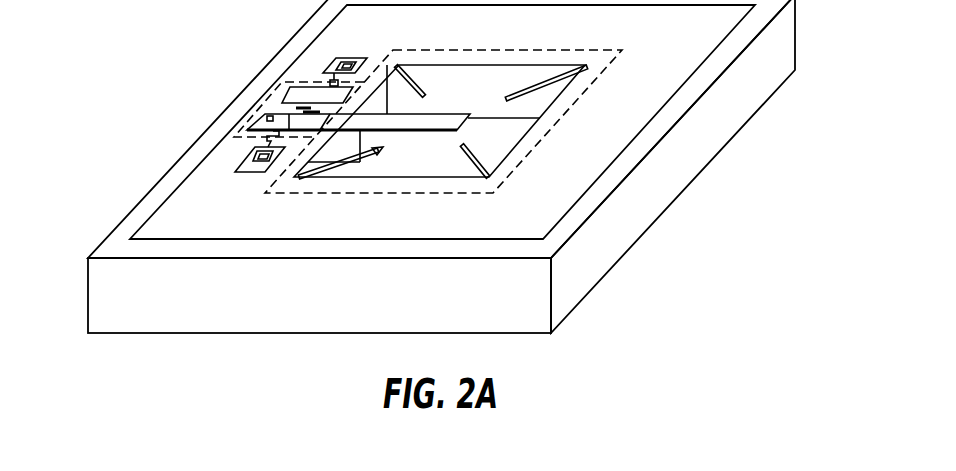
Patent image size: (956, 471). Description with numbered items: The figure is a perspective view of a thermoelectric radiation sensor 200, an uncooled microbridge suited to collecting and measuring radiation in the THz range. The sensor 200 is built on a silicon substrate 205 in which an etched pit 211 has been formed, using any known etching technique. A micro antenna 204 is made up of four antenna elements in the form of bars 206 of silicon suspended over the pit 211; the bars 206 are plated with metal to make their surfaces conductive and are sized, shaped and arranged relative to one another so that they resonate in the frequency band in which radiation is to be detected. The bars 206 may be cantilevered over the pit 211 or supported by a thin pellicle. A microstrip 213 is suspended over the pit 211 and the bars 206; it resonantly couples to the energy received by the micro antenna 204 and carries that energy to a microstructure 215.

The sensor 200 is at (441, 166).
The micro antenna 204 is at (537, 65).
The silicon substrate 205 is at (670, 182).
The bars 206 is at (527, 88).
The etched pit 211 is at (500, 147).
The microstrip 213 is at (427, 117).
The microstructure 215 is at (372, 33).